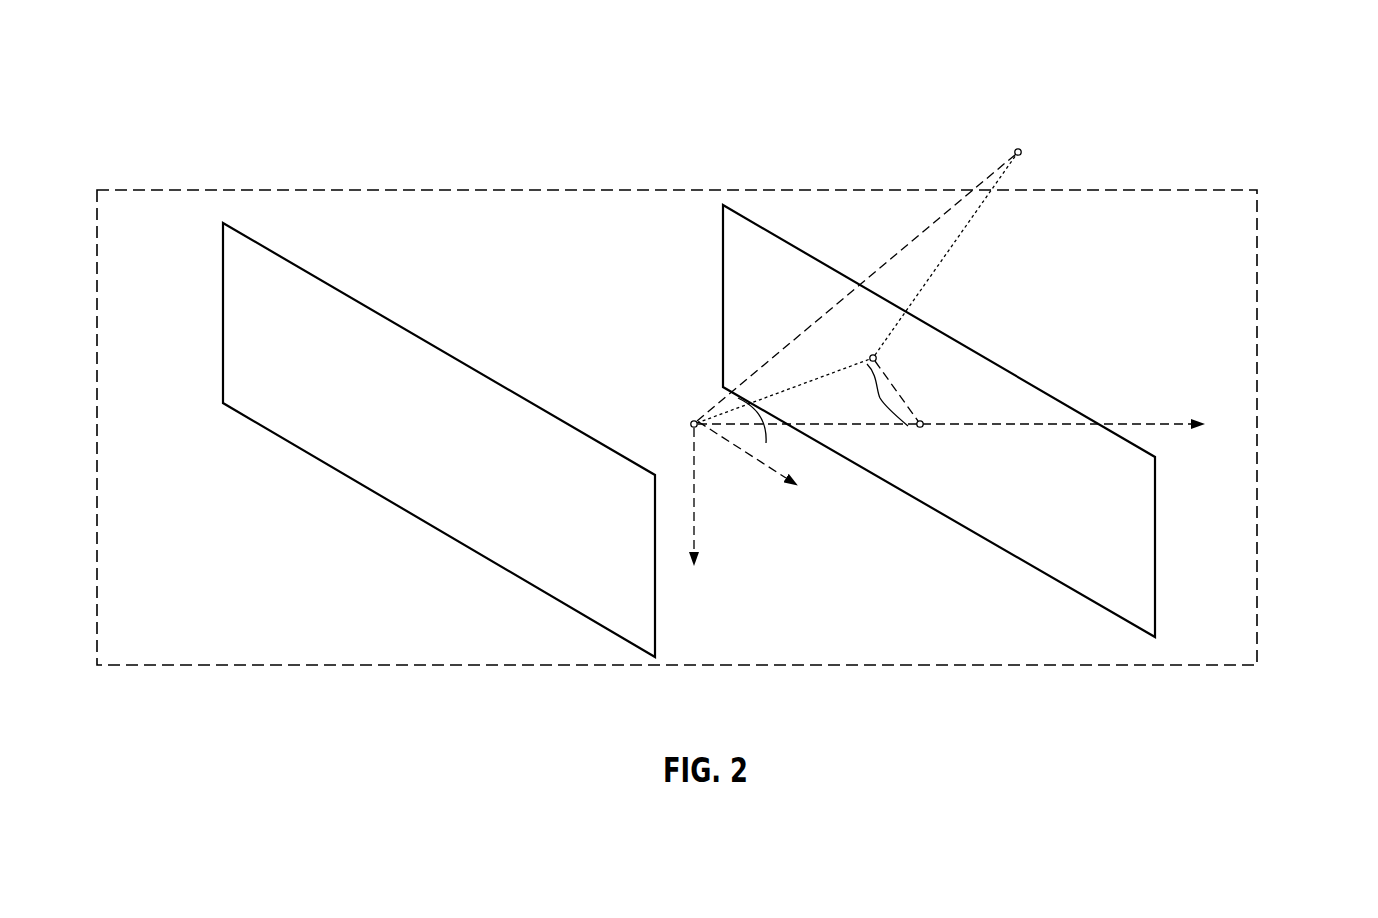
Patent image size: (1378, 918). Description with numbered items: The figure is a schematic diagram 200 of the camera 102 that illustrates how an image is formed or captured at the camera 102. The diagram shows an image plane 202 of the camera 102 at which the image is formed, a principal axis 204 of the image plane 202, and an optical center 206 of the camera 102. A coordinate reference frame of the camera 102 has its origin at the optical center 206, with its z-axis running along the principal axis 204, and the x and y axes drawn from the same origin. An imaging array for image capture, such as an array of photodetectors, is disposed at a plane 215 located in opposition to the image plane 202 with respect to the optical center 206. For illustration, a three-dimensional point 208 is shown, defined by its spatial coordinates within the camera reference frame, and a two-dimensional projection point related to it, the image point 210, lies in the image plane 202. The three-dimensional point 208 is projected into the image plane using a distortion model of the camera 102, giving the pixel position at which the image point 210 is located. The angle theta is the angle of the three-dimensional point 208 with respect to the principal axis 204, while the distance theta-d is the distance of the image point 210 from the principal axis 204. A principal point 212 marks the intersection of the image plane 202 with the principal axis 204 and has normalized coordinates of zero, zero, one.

The schematic diagram 200 is at (1283, 72).
The camera 102 is at (729, 190).
The plane 215 is at (410, 331).
The image plane 202 is at (830, 268).
The principal axis 204 is at (1160, 423).
The optical center 206 is at (692, 410).
The 3D point 208 is at (1016, 142).
The 2D image point 210 is at (862, 350).
The principal point 212 is at (918, 438).